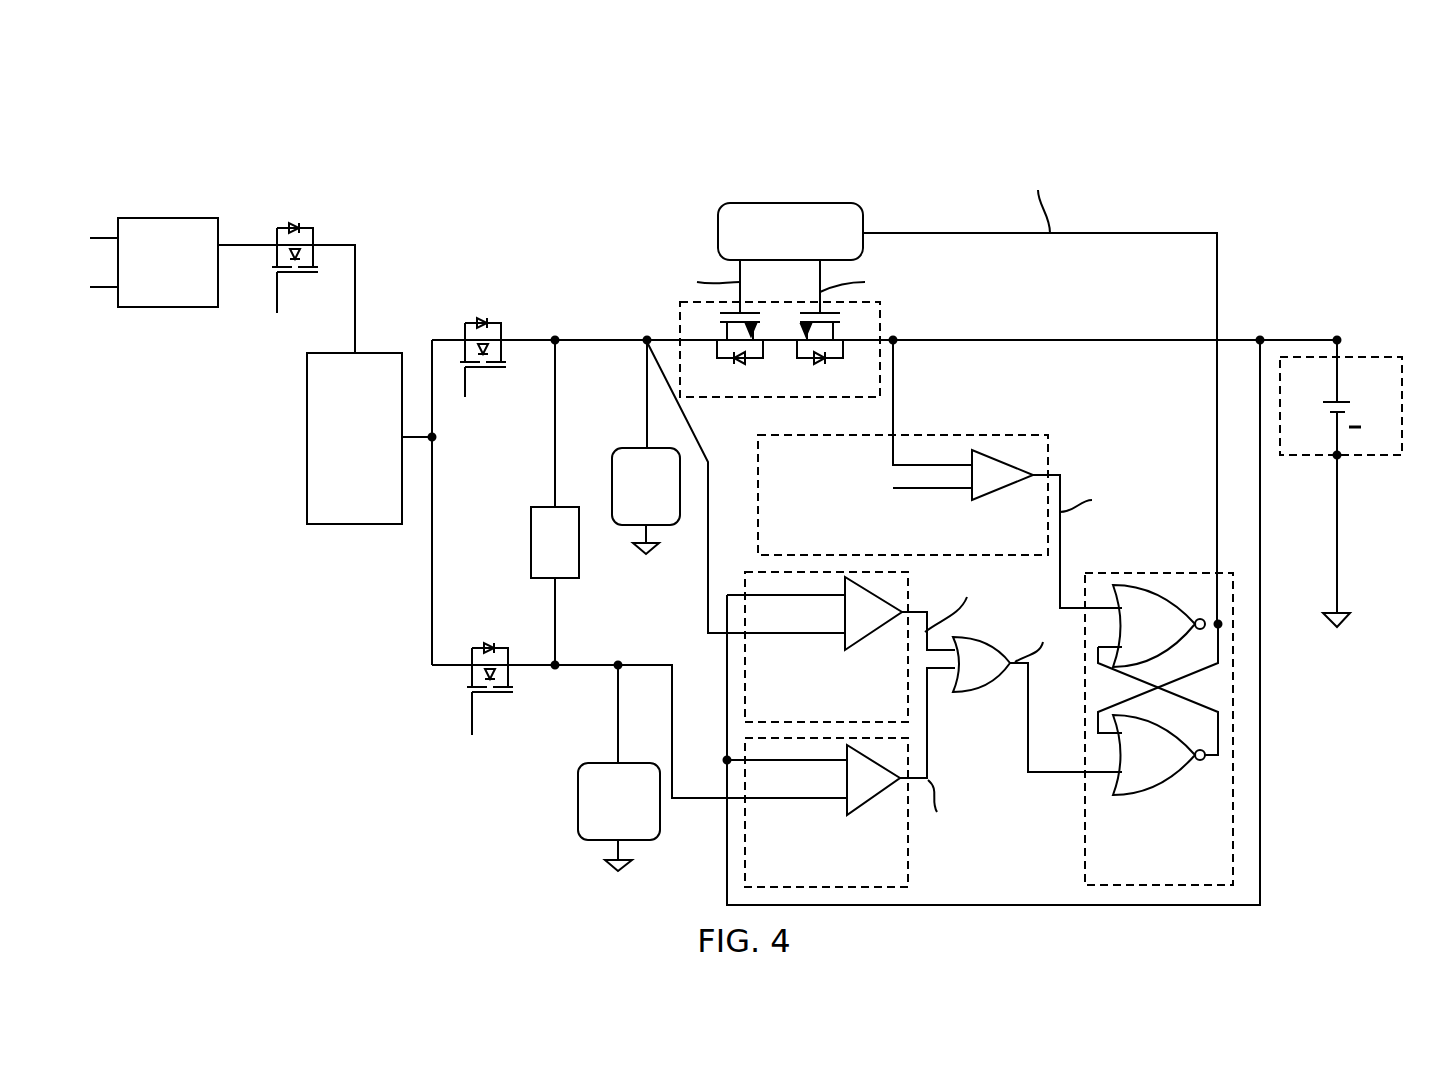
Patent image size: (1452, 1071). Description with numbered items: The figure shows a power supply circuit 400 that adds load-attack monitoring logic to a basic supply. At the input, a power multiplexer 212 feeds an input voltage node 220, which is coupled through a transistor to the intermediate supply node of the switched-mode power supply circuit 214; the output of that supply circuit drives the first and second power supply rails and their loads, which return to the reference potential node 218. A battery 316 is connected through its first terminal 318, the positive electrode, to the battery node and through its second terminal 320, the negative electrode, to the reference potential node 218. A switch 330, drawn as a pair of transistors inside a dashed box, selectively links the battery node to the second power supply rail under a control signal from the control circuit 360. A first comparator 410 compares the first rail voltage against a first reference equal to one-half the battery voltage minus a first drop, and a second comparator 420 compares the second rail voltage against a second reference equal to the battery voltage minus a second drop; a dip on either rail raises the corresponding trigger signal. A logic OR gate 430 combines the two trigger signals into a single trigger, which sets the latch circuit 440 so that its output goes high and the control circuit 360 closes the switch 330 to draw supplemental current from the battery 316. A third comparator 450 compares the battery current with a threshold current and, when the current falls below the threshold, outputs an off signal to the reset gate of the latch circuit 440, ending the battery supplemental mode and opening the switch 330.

The power supply circuit 400 is at (197, 84).
The power multiplexer 212 is at (167, 218).
The input voltage node 220 is at (269, 248).
The SMPS circuit 214 is at (307, 432).
The reference potential node 218 is at (610, 860).
The control circuit 360 is at (795, 203).
The switch 330 is at (883, 330).
The third comparator 450 is at (940, 474).
The second comparator 420 is at (841, 647).
The first comparator 410 is at (841, 777).
The logic OR gate 430 is at (972, 690).
The latch circuit 440 is at (1159, 729).
The first terminal 318 is at (1337, 340).
The second terminal 320 is at (1337, 453).
The battery 316 is at (1366, 422).